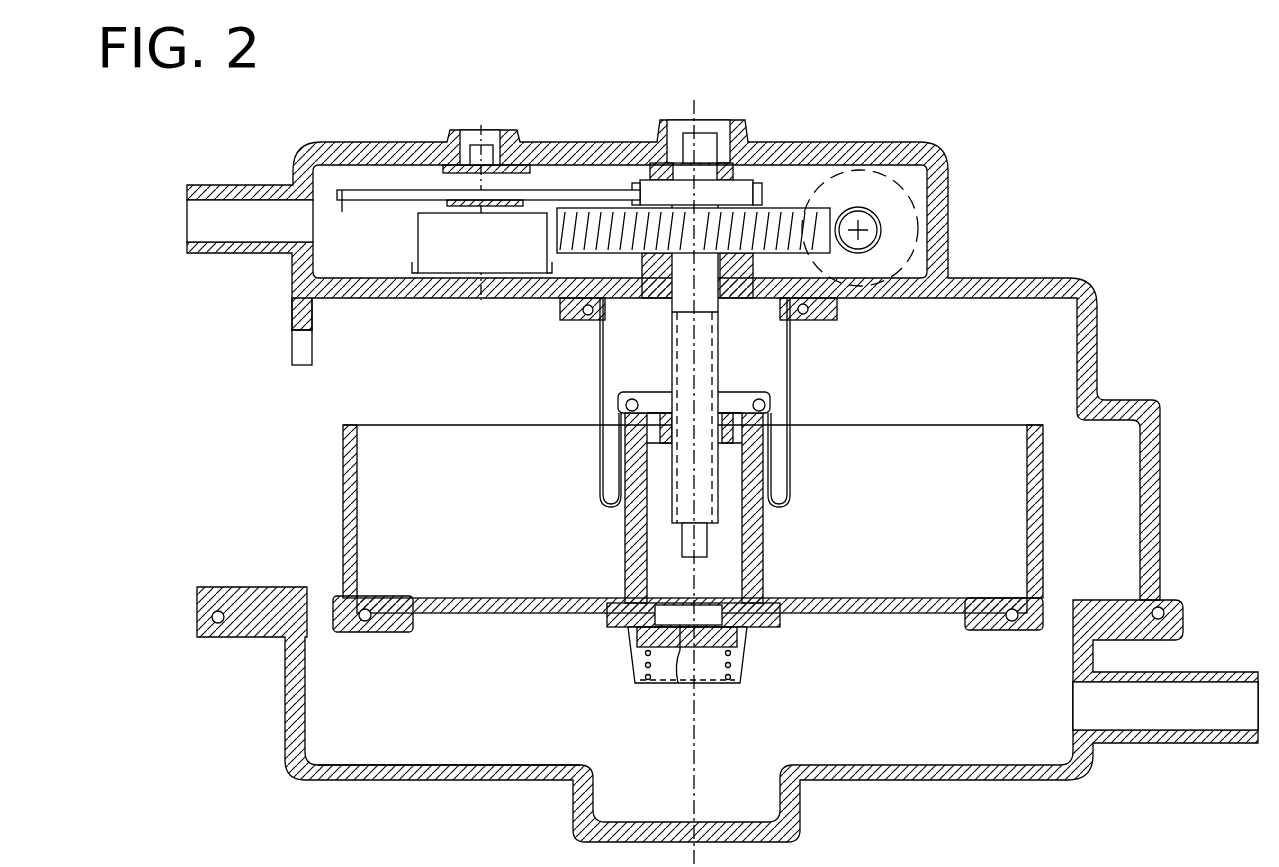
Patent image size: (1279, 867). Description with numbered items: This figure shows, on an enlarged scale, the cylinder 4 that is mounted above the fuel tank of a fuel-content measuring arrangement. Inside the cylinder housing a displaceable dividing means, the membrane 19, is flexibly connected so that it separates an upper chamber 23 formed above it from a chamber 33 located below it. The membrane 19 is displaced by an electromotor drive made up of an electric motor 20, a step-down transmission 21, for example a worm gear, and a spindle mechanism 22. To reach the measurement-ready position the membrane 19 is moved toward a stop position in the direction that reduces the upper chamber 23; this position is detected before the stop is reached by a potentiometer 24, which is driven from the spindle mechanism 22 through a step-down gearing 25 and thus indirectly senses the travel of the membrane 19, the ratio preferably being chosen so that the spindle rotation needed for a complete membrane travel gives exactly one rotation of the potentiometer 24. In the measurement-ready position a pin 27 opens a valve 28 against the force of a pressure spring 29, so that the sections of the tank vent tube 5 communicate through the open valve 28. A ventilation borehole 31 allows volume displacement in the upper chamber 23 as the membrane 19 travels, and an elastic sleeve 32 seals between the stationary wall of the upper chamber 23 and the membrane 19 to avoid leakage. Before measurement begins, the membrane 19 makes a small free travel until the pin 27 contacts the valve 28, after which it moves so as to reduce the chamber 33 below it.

The cylinder 4 is at (1088, 787).
The tank vent tube 5 is at (233, 207).
The membrane 19 is at (490, 617).
The electric motor 20 is at (905, 218).
The step-down transmission 21 is at (860, 208).
The spindle mechanism 22 is at (733, 408).
The upper chamber 23 is at (367, 340).
The potentiometer 24 is at (433, 235).
The step-down gearing 25 is at (585, 190).
The pin 27 is at (685, 537).
The valve 28 is at (678, 683).
The pressure spring 29 is at (727, 657).
The ventilation borehole 31 is at (300, 342).
The elastic sleeve 32 is at (597, 477).
The chamber 33 is at (367, 740).